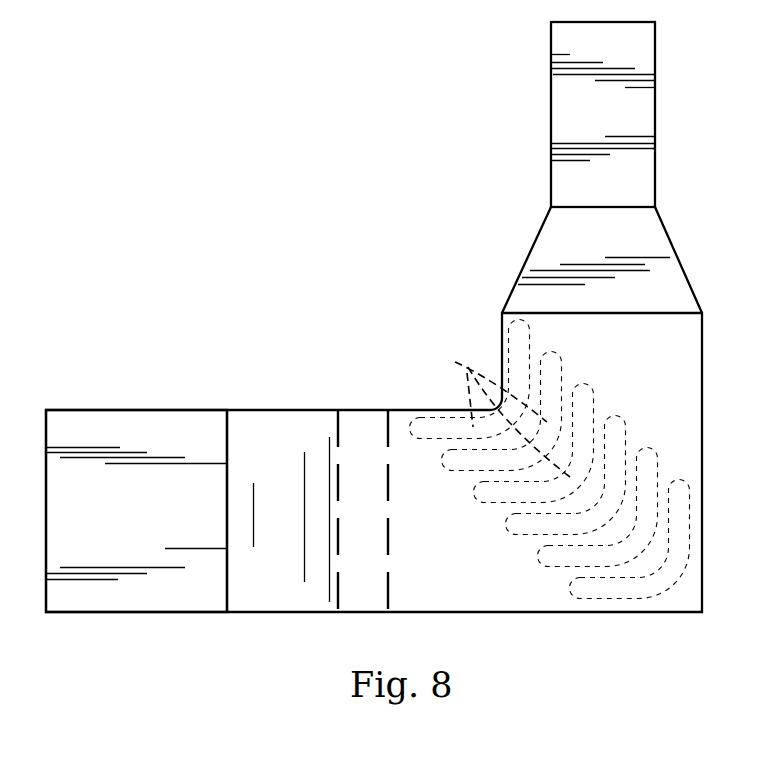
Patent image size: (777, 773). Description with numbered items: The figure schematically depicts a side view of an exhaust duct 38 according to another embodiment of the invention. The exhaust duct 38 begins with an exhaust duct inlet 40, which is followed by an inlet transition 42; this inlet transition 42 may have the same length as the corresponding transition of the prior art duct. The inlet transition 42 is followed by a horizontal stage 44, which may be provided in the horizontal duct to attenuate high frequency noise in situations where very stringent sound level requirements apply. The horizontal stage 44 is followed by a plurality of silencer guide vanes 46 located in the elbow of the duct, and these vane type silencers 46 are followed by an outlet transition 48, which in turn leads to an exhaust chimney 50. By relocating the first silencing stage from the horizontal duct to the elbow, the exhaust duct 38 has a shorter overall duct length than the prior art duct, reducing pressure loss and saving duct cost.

The exhaust duct 38 is at (415, 193).
The exhaust duct inlet 40 is at (140, 420).
The inlet transition 42 is at (278, 420).
The horizontal stage 44 is at (355, 422).
The silencer guide vanes 46 is at (456, 362).
The outlet transition 48 is at (655, 238).
The exhaust chimney 50 is at (565, 102).